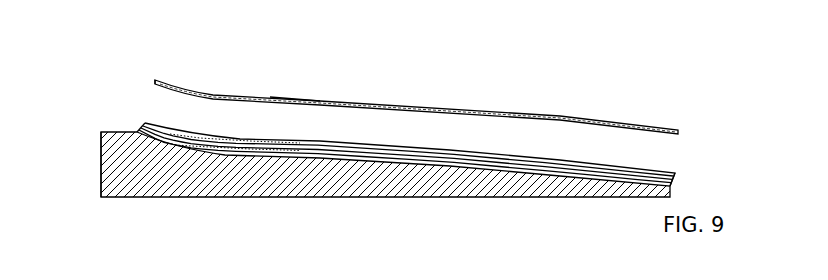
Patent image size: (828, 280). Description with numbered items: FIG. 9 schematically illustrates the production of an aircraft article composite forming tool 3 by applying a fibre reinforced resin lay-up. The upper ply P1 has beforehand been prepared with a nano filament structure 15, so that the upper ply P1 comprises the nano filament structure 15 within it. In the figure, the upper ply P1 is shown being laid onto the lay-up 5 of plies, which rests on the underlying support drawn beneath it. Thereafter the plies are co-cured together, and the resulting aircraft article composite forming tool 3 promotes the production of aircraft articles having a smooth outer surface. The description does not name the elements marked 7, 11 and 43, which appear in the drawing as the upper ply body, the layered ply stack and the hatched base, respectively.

The lay-up of plies 5 is at (108, 99).
The upper ply P1 is at (146, 76).
The nano filament structure 15 is at (198, 112).
The strip layer 7 is at (578, 115).
The aircraft article composite forming tool 3 is at (703, 143).
The layer stack 11 is at (703, 168).
The base block 43 is at (337, 197).